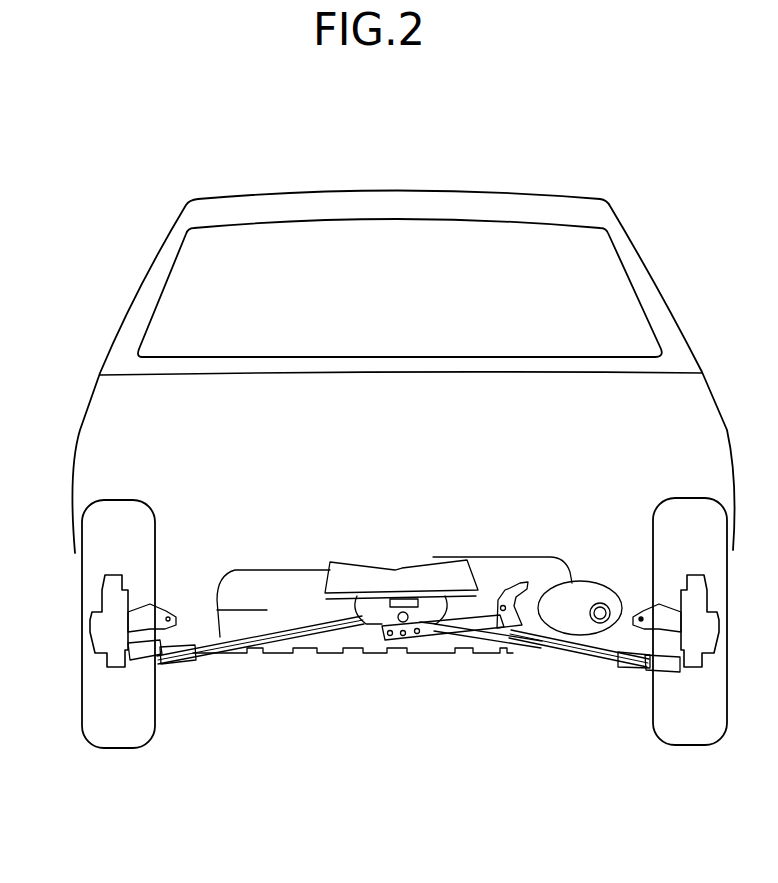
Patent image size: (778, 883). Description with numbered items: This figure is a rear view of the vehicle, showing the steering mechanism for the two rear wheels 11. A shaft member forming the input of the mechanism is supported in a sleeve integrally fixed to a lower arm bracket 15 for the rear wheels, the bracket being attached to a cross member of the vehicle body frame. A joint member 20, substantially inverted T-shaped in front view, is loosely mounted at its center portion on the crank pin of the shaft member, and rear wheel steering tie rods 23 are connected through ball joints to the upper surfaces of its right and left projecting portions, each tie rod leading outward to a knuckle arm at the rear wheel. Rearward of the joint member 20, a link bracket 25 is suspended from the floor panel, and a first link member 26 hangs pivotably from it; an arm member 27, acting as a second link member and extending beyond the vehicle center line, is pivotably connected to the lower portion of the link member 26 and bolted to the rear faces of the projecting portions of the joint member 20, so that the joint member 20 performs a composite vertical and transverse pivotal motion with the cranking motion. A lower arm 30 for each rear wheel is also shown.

The rear wheels 11 is at (98, 730).
The lower arm bracket 15 is at (372, 605).
The joint member 20 is at (403, 597).
The rear wheel steering tie rods 23 is at (277, 640).
The link bracket 25 is at (515, 593).
The first link member 26 is at (533, 630).
The arm member 27 is at (444, 634).
The lower arm 30 is at (310, 627).